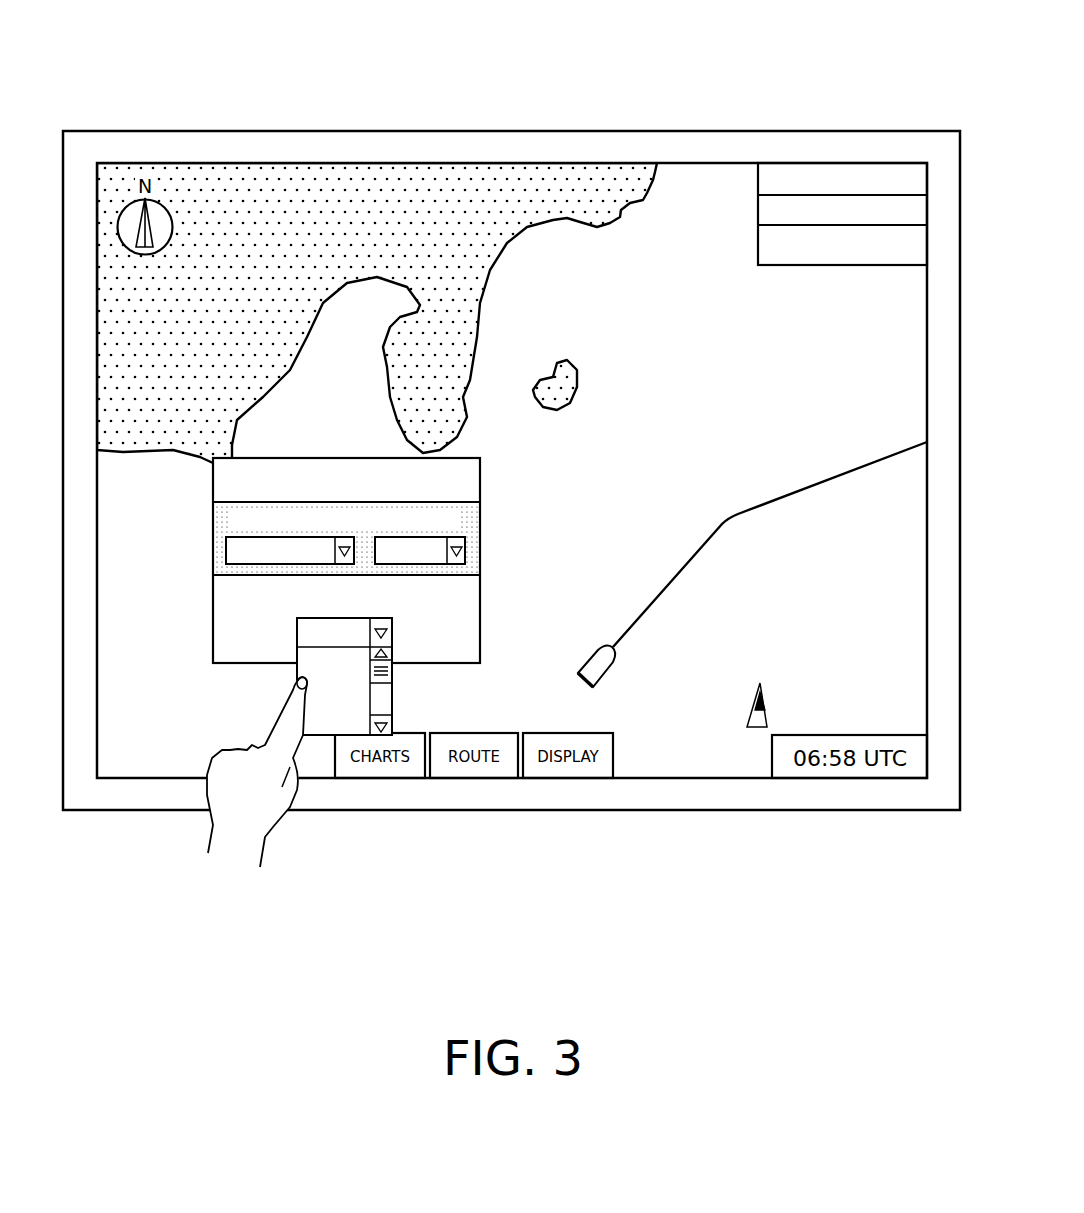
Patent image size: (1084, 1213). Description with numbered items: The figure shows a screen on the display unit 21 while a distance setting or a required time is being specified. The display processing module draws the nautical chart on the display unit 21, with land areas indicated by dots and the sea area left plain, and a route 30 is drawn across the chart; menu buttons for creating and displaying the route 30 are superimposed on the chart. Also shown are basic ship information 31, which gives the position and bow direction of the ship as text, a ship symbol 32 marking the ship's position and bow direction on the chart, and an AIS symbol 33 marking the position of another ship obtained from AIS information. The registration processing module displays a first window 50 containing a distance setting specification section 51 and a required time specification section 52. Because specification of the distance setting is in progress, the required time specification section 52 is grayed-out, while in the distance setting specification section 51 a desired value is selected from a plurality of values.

The display unit 21 is at (92, 120).
The route 30 is at (660, 602).
The basic ship information 31 is at (832, 162).
The ship symbol 32 is at (608, 683).
The AIS symbol 33 is at (755, 730).
The first window 50 is at (275, 721).
The distance setting specification section 51 is at (240, 652).
The required time specification section 52 is at (220, 528).